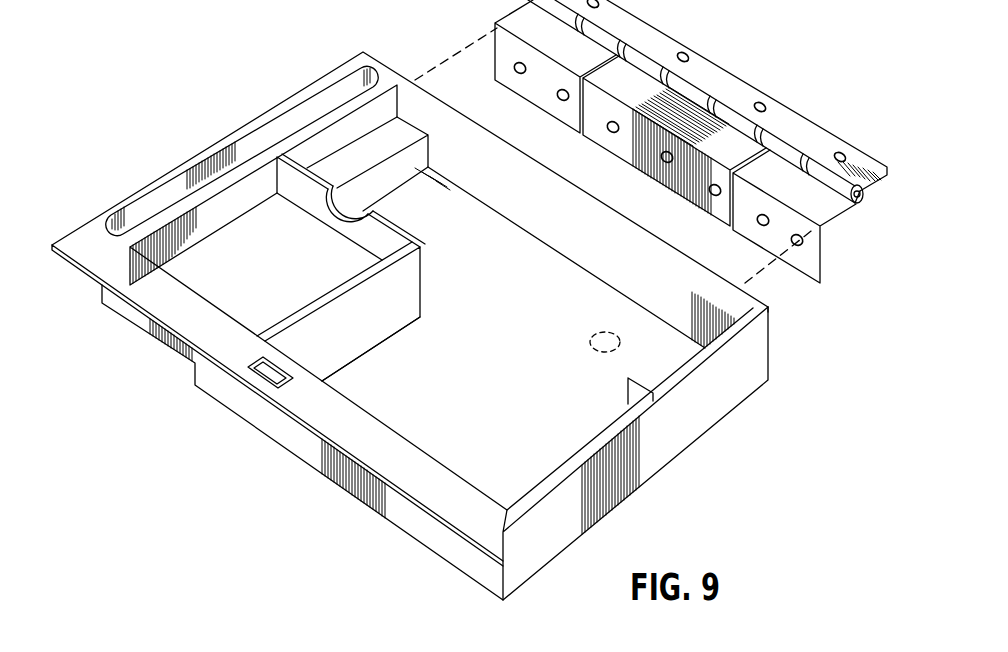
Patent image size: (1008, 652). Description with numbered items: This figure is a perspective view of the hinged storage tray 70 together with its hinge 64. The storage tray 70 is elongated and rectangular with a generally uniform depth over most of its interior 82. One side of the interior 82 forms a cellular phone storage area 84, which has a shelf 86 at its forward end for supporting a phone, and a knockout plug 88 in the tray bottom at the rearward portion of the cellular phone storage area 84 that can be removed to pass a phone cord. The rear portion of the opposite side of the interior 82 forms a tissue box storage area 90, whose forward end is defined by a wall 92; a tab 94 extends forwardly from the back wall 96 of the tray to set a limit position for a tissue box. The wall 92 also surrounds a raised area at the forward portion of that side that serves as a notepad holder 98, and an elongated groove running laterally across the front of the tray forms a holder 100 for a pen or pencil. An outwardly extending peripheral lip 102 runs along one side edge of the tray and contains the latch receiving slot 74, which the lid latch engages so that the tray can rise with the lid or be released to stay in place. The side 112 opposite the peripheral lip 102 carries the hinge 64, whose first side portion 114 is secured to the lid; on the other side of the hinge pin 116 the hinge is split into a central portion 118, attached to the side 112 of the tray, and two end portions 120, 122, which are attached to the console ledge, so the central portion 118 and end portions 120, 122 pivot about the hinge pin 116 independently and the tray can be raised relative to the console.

The hinge 64 is at (877, 204).
The storage tray 70 is at (370, 535).
The latch receiving slot 74 is at (273, 375).
The interior 82 is at (677, 353).
The cellular phone storage area 84 is at (508, 288).
The shelf 86 is at (383, 140).
The knockout plug 88 is at (590, 338).
The tissue box storage area 90 is at (492, 441).
The wall 92 is at (353, 333).
The tab 94 is at (626, 393).
The back wall 96 is at (633, 460).
The notepad holder 98 is at (280, 289).
The holder 100 is at (310, 112).
The peripheral lip 102 is at (387, 450).
The side 112 is at (767, 303).
The first side portion 114 is at (808, 137).
The hinge pin 116 is at (852, 212).
The central portion 118 is at (627, 150).
The end portion 120 is at (530, 82).
The end portion 122 is at (813, 267).